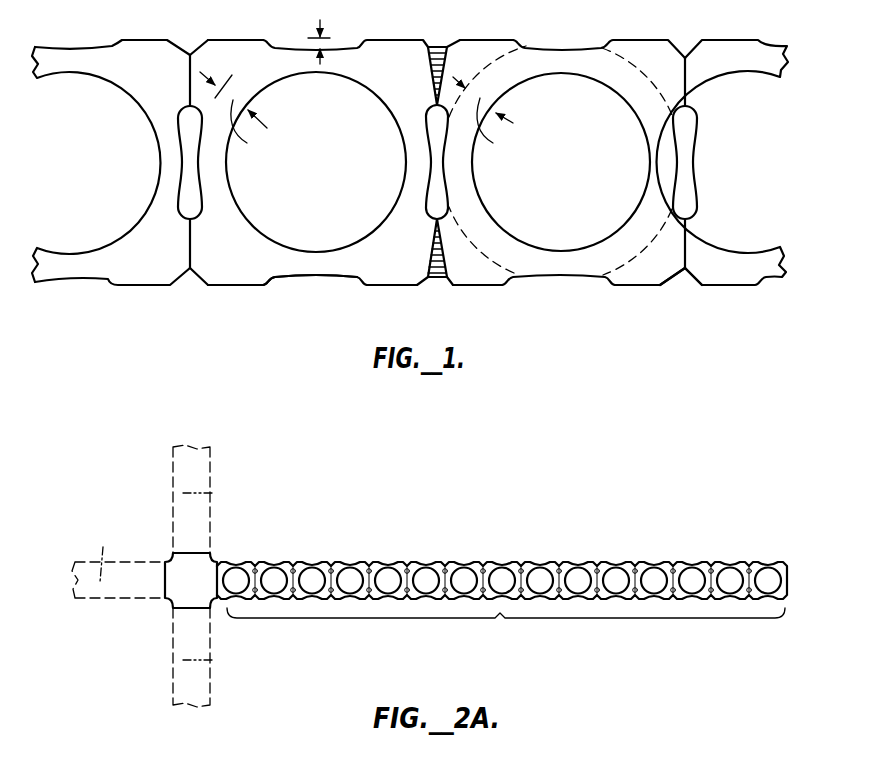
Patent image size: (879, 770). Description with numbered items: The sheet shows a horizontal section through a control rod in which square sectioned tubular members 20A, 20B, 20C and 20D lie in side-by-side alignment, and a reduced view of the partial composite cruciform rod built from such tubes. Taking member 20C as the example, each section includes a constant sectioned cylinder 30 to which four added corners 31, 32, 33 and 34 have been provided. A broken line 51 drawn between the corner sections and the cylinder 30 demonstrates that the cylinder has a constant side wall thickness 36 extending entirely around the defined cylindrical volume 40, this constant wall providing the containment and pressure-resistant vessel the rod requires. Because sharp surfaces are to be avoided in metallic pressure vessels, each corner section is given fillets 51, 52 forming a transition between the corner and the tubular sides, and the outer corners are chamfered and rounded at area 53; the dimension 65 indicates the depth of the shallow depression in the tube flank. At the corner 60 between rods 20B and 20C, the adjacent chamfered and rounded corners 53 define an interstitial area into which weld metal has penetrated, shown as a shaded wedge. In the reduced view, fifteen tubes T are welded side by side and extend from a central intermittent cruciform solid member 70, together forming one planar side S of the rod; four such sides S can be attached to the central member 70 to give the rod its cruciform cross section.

In FIG. 1, the square sectioned tubular member 20A is at (134, 40).
In FIG. 1, the square sectioned tubular member 20B is at (376, 38).
In FIG. 1, the square sectioned tubular member 20C is at (620, 38).
In FIG. 1, the square sectioned tubular member 20D is at (760, 40).
In FIG. 1, the corner 31 is at (207, 40).
In FIG. 1, the depression depth 65 is at (302, 33).
In FIG. 1, the corner / weld metal area 60 is at (436, 44).
In FIG. 1, the fillet 52 is at (431, 114).
In FIG. 1, the corner 34 is at (400, 57).
In FIG. 1, the constant sectioned cylinder 30 is at (538, 54).
In FIG. 1, the cylindrical volume 40 is at (607, 162).
In FIG. 1, the fillet 51 is at (513, 42).
In FIG. 1, the side wall thickness 36 is at (359, 115).
In FIG. 1, the corner 32 is at (222, 277).
In FIG. 1, the corner 33 is at (400, 280).
In FIG. 1, the tube T is at (313, 289).
In FIG. 2A, the tube T is at (734, 554).
In FIG. 1, the chamfered and rounded corner area 53 is at (677, 287).
In FIG. 2A, the planar side S is at (215, 492).
In FIG. 2A, the central intermittent cruciform solid member 70 is at (204, 572).